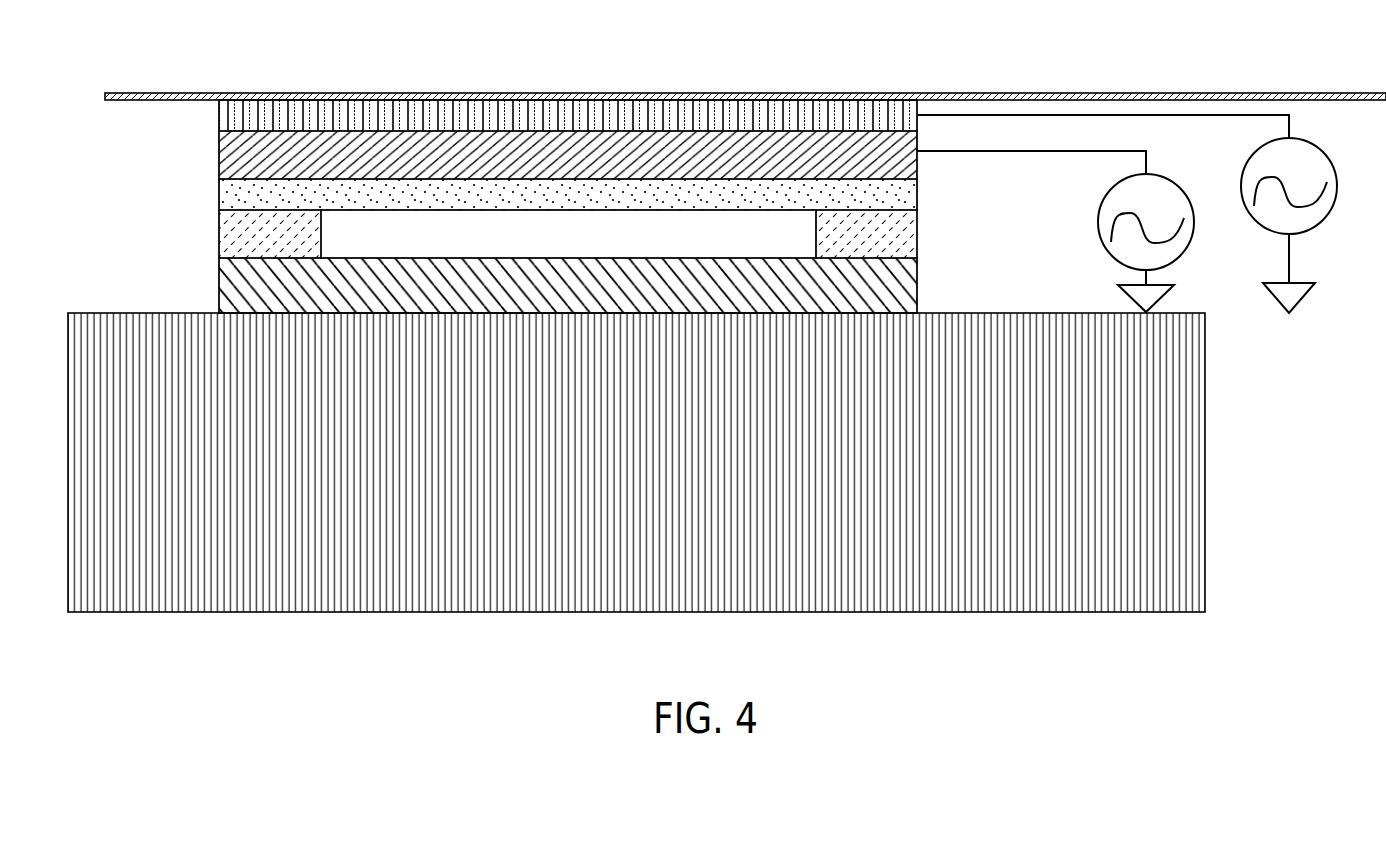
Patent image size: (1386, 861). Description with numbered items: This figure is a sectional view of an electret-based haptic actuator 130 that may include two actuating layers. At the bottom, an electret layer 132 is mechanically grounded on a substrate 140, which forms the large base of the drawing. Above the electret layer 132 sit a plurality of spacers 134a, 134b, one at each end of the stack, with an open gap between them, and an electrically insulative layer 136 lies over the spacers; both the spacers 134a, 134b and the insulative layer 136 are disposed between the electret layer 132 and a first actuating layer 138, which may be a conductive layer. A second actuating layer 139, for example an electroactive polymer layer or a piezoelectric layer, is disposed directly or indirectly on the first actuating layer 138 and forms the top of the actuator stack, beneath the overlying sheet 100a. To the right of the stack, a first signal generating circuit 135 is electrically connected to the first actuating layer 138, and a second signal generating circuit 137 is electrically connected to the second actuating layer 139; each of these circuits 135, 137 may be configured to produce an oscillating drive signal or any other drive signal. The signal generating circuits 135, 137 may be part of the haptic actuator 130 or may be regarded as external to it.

The substrate / sheet 100a is at (1078, 93).
The haptic actuator 130 is at (100, 268).
The electret layer 132 is at (219, 300).
The spacer 134a is at (219, 245).
The spacer 134b is at (917, 238).
The first signal generating circuit 135 is at (1098, 210).
The electrically insulative layer 136 is at (219, 198).
The second signal generating circuit 137 is at (1243, 175).
The first actuating layer 138 is at (219, 160).
The second actuating layer 139 is at (219, 124).
The substrate 140 is at (1205, 428).